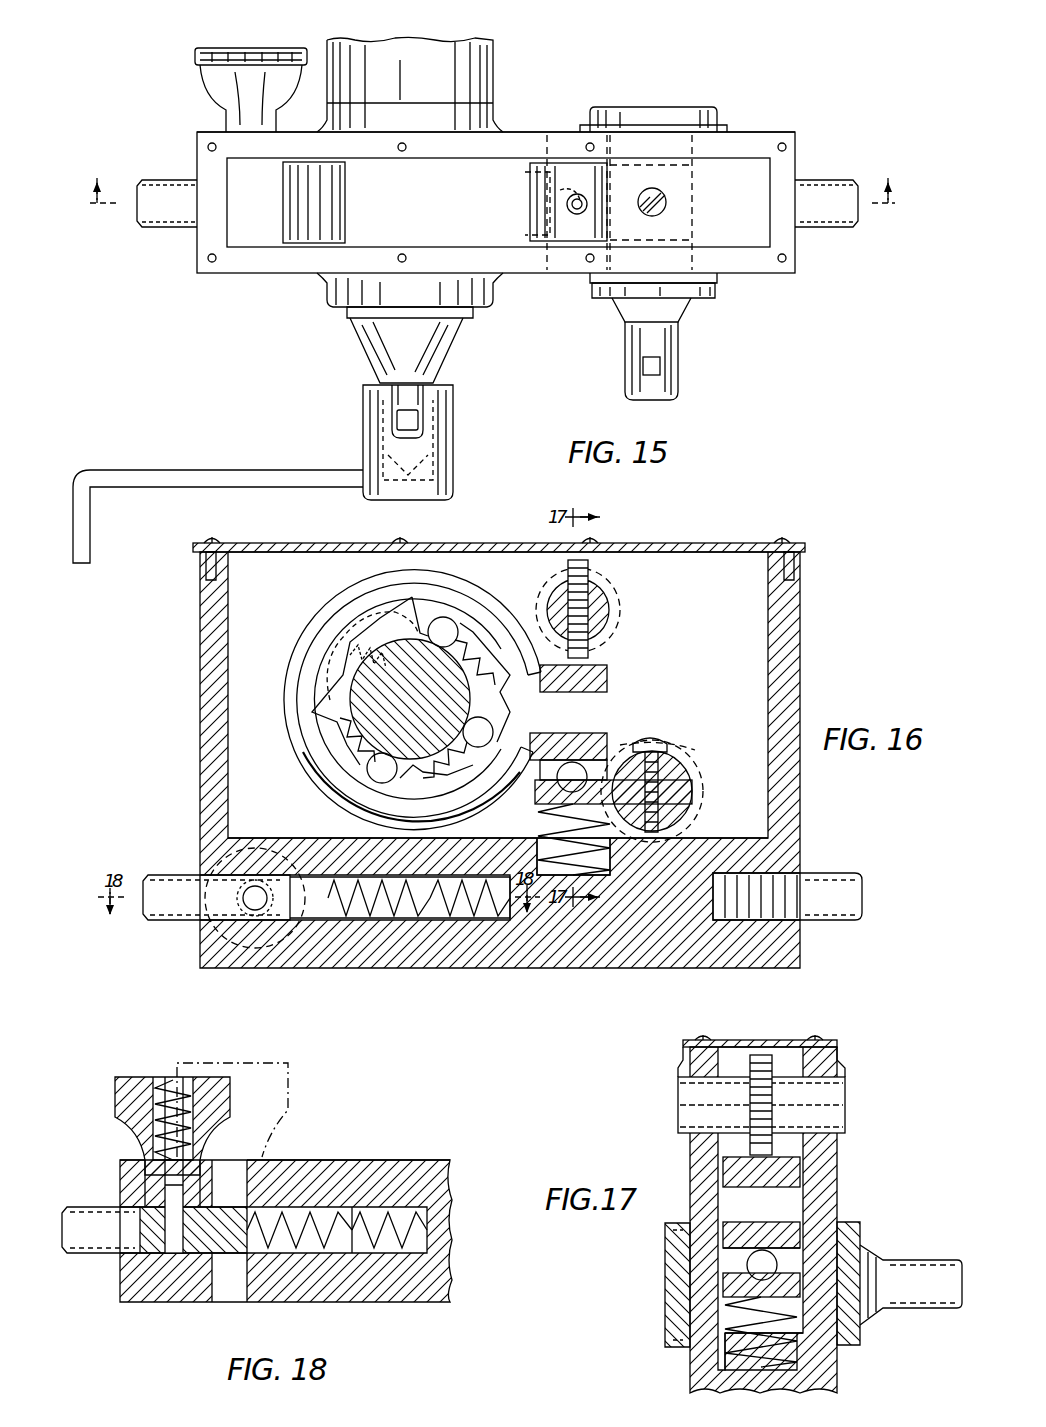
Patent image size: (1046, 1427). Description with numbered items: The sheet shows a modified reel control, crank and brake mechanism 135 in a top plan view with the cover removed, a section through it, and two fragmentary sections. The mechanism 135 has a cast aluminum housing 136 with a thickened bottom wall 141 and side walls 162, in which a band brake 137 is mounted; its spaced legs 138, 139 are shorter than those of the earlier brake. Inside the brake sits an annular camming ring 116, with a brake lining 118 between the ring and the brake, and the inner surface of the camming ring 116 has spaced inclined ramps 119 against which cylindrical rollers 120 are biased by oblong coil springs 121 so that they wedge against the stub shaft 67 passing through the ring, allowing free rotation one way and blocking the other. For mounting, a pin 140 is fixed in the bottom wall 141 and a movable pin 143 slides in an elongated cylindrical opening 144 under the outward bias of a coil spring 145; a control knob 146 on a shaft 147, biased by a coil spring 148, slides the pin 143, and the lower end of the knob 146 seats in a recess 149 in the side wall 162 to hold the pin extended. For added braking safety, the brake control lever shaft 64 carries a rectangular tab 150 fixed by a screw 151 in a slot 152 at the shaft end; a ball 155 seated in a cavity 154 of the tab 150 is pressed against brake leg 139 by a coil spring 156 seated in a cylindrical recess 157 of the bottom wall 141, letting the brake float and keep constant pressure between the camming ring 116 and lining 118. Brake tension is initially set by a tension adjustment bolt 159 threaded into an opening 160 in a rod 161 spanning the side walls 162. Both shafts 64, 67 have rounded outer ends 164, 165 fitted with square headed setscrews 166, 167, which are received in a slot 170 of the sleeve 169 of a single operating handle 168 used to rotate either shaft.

In FIG. 15, the brake control lever shaft 64 is at (668, 183).
In FIG. 16, the brake control lever shaft 64 is at (695, 760).
In FIG. 17, the brake control lever shaft 64 is at (865, 1328).
In FIG. 15, the stub shaft 67 is at (355, 320).
In FIG. 16, the stub shaft 67 is at (365, 697).
In FIG. 16, the camming ring 116 is at (405, 788).
In FIG. 16, the brake lining 118 is at (340, 620).
In FIG. 16, the inclined ramps 119 is at (448, 625).
In FIG. 16, the rollers 120 is at (375, 767).
In FIG. 16, the coil springs 121 is at (355, 738).
In FIG. 15, the modified reel control, crank and brake mechanism 135 is at (745, 120).
In FIG. 15, the housing 136 is at (250, 278).
In FIG. 16, the housing 136 is at (192, 675).
In FIG. 18, the housing 136 is at (405, 1308).
In FIG. 17, the housing 136 is at (682, 1168).
In FIG. 15, the band brake 137 is at (325, 222).
In FIG. 16, the band brake 137 is at (292, 650).
In FIG. 16, the leg 138 is at (607, 668).
In FIG. 17, the leg 138 is at (790, 1162).
In FIG. 16, the leg 139 is at (595, 735).
In FIG. 17, the leg 139 is at (740, 1237).
In FIG. 15, the pin 140 is at (820, 205).
In FIG. 16, the pin 140 is at (850, 890).
In FIG. 16, the bottom wall 141 is at (608, 935).
In FIG. 18, the bottom wall 141 is at (420, 1175).
In FIG. 17, the bottom wall 141 is at (700, 1385).
In FIG. 15, the movable pin 143 is at (165, 190).
In FIG. 16, the movable pin 143 is at (190, 880).
In FIG. 18, the movable pin 143 is at (88, 1232).
In FIG. 16, the elongated cylindrical-shaped opening 144 is at (440, 920).
In FIG. 18, the elongated cylindrical-shaped opening 144 is at (365, 1255).
In FIG. 16, the coil spring 145 is at (485, 920).
In FIG. 18, the coil spring 145 is at (380, 1220).
In FIG. 15, the control knob 146 is at (222, 46).
In FIG. 16, the control knob 146 is at (215, 850).
In FIG. 18, the control knob 146 is at (118, 1085).
In FIG. 16, the shaft 147 is at (255, 910).
In FIG. 18, the shaft 147 is at (172, 1253).
In FIG. 18, the coil spring 148 is at (150, 1118).
In FIG. 18, the recess 149 is at (135, 1185).
In FIG. 15, the tab 150 is at (540, 180).
In FIG. 16, the tab 150 is at (545, 795).
In FIG. 17, the tab 150 is at (735, 1285).
In FIG. 15, the screw 151 is at (668, 202).
In FIG. 16, the screw 151 is at (668, 738).
In FIG. 16, the slot 152 is at (670, 792).
In FIG. 16, the cavity 154 is at (560, 770).
In FIG. 17, the cavity 154 is at (800, 1232).
In FIG. 15, the ball 155 is at (560, 195).
In FIG. 16, the ball 155 is at (572, 765).
In FIG. 17, the ball 155 is at (750, 1267).
In FIG. 16, the coil spring 156 is at (600, 845).
In FIG. 17, the coil spring 156 is at (780, 1345).
In FIG. 16, the cylindrical-shaped recess 157 is at (537, 855).
In FIG. 17, the cylindrical-shaped recess 157 is at (725, 1358).
In FIG. 15, the tension adjustment bolt 159 is at (570, 210).
In FIG. 16, the tension adjustment bolt 159 is at (575, 585).
In FIG. 17, the tension adjustment bolt 159 is at (752, 1060).
In FIG. 16, the opening 160 is at (600, 600).
In FIG. 17, the opening 160 is at (775, 1100).
In FIG. 15, the rod 161 is at (575, 160).
In FIG. 16, the rod 161 is at (612, 626).
In FIG. 17, the rod 161 is at (700, 1098).
In FIG. 15, the side wall 162 is at (228, 132).
In FIG. 16, the side wall 162 is at (300, 570).
In FIG. 18, the side wall 162 is at (128, 1168).
In FIG. 17, the side wall 162 is at (832, 1042).
In FIG. 15, the rounded outer end 164 is at (665, 383).
In FIG. 15, the rounded outer end 165 is at (410, 392).
In FIG. 15, the square headed setscrew 166 is at (660, 362).
In FIG. 15, the square headed setscrew 167 is at (420, 431).
In FIG. 15, the operating handle 168 is at (190, 476).
In FIG. 15, the sleeve 169 is at (373, 450).
In FIG. 15, the slot 170 is at (395, 392).